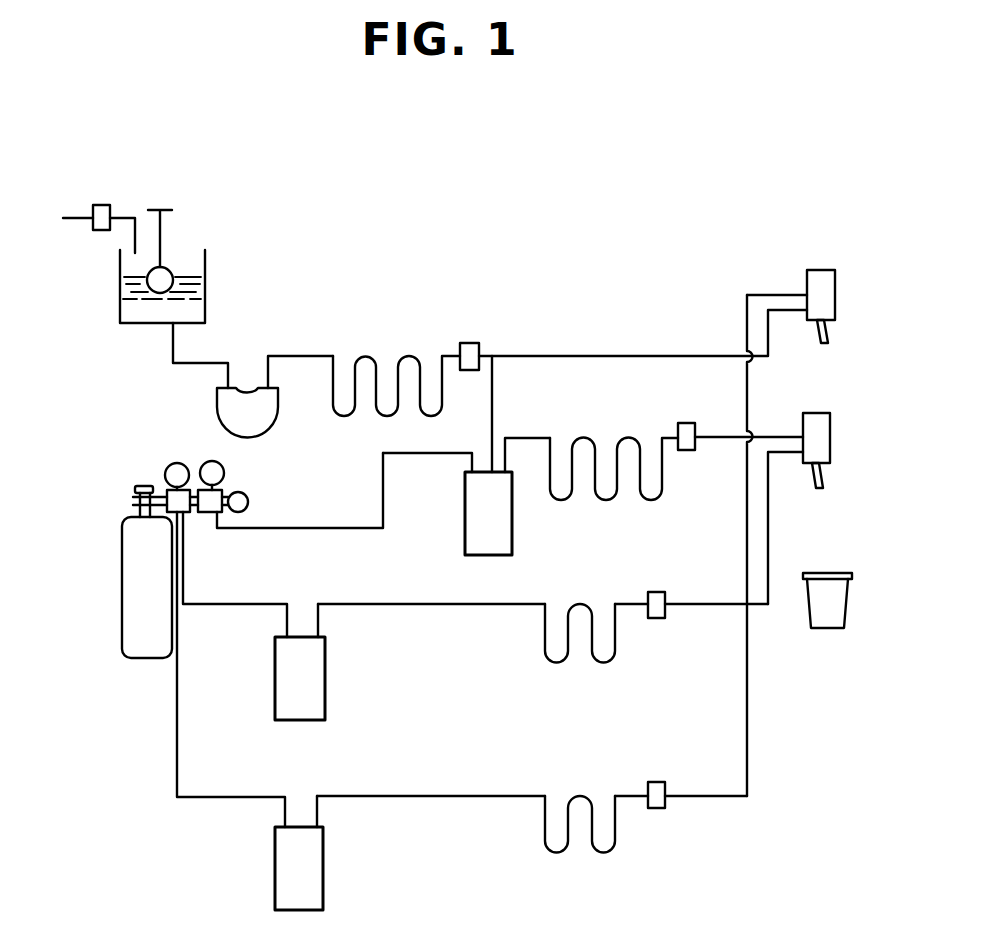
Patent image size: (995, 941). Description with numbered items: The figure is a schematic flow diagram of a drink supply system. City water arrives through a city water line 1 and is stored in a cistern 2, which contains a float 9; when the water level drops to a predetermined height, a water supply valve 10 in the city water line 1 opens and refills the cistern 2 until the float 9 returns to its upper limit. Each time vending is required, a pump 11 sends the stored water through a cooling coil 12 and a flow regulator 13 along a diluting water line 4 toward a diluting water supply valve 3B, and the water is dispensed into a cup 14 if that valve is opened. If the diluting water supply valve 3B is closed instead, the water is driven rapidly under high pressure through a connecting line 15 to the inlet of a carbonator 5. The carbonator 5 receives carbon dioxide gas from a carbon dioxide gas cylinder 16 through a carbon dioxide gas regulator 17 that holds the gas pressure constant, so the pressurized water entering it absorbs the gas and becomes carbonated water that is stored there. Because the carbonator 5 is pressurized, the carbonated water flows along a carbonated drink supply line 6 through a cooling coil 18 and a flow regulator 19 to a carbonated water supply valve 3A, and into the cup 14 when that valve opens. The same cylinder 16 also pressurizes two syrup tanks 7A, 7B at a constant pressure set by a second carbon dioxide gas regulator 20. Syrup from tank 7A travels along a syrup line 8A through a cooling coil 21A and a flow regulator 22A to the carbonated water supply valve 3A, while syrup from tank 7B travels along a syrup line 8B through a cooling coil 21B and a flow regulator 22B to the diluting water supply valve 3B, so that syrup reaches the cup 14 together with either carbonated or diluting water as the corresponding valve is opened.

The city water line 1 is at (72, 218).
The water supply valve 10 is at (103, 205).
The float 9 is at (162, 230).
The cistern 2 is at (205, 282).
The pump 11 is at (217, 402).
The cooling coil 12 is at (363, 354).
The flow regulator 13 is at (470, 342).
The diluting water line 4 is at (535, 354).
The connecting line 15 is at (492, 403).
The carbonator 5 is at (512, 535).
The cooling coil 18 is at (605, 500).
The flow regulator 19 is at (687, 451).
The carbonated drink supply line 6 is at (722, 440).
The carbonated water supply valve 3A is at (830, 439).
The diluting water supply valve 3B is at (835, 284).
The carbon dioxide gas regulator 20 is at (167, 493).
The carbon dioxide gas regulator 17 is at (225, 492).
The carbon dioxide gas cylinder 16 is at (122, 592).
The syrup tank 7A is at (325, 683).
The syrup tank 7B is at (323, 873).
The syrup line 8A is at (475, 606).
The syrup line 8B is at (472, 798).
The cooling coil 21A is at (593, 662).
The cooling coil 21B is at (595, 851).
The flow regulator 22A is at (657, 619).
The flow regulator 22B is at (653, 809).
The cup 14 is at (849, 614).